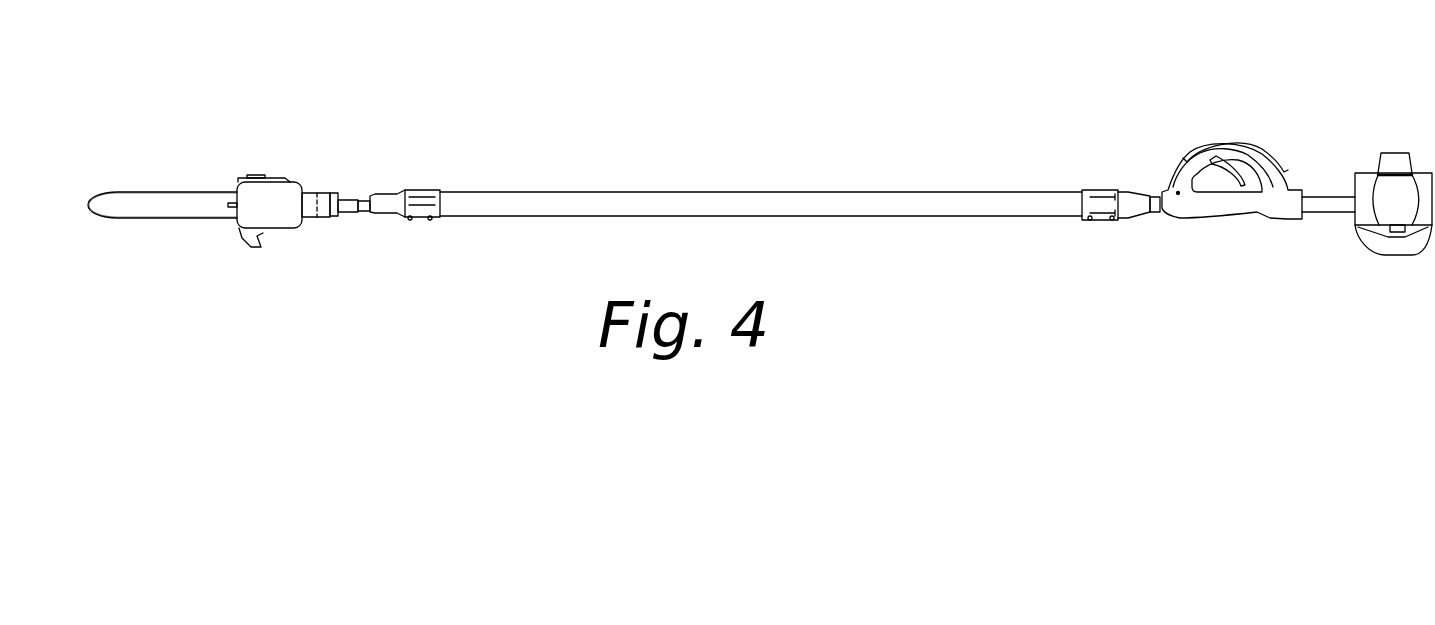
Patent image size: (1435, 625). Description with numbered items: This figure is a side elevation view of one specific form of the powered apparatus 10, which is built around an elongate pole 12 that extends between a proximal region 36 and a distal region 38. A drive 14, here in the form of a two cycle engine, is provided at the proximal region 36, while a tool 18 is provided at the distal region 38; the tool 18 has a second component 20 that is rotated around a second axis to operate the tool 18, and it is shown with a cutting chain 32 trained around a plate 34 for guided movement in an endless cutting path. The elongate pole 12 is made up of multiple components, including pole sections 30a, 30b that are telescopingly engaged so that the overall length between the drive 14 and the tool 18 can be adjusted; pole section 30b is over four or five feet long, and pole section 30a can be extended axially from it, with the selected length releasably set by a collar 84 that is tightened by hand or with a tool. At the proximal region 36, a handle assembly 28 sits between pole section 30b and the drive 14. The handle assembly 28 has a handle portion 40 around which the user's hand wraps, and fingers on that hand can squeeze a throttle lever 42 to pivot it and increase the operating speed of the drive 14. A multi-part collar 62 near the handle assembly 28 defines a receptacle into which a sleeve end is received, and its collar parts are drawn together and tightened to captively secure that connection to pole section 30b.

The powered apparatus 10 is at (1015, 148).
The elongate pole 12 is at (880, 227).
The drive 14 is at (1381, 257).
The tool 18 is at (272, 178).
The second component 20 is at (317, 193).
The handle assembly 28 is at (1238, 137).
The pole section 30a is at (360, 196).
The pole section 30b is at (758, 192).
The cutting chain 32 is at (185, 190).
The plate 34 is at (195, 210).
The proximal region 36 is at (1325, 187).
The distal region 38 is at (338, 184).
The handle portion 40 is at (1260, 165).
The throttle lever 42 is at (1226, 177).
The multi-part collar 62 is at (1100, 190).
The collar 84 is at (430, 222).